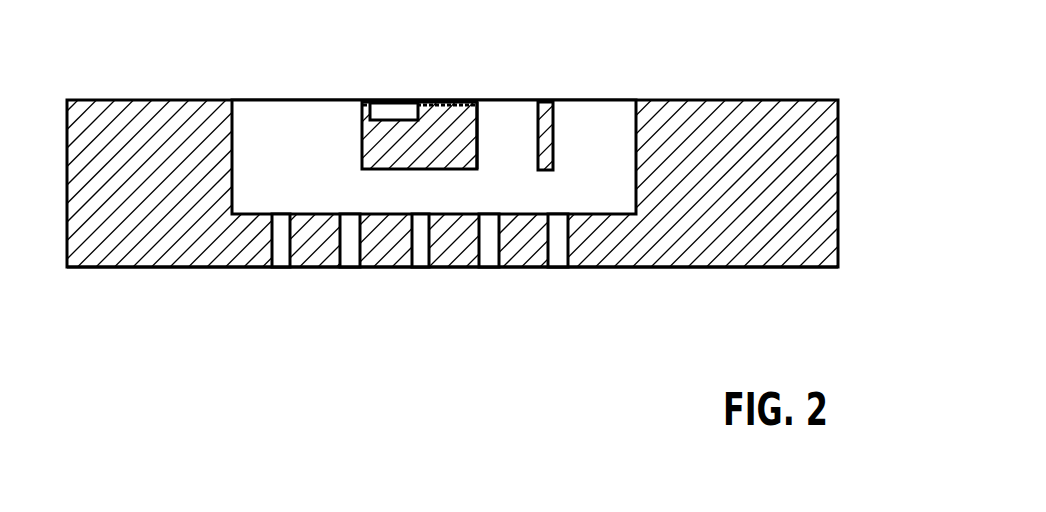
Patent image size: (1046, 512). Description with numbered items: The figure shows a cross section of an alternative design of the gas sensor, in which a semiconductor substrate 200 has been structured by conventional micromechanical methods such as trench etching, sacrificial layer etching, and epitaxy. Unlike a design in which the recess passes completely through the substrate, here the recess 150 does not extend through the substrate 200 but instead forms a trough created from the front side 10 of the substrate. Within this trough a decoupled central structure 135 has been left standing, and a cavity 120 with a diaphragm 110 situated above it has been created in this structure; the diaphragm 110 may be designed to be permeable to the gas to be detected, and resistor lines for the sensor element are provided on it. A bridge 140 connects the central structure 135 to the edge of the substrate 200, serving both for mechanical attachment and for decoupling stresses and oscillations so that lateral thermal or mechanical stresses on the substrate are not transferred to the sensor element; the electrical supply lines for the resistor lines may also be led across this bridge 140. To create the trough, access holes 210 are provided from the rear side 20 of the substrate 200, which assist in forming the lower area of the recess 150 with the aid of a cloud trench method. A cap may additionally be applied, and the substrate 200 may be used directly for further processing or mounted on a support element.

The front side 10 is at (501, 200).
The rear side 20 is at (212, 296).
The diaphragm 110 is at (451, 100).
The cavity 120 is at (394, 100).
The central structure 135 is at (470, 145).
The bridge 140 is at (547, 119).
The recess 150 is at (317, 171).
The substrate 200 is at (744, 127).
The access holes 210 is at (557, 257).